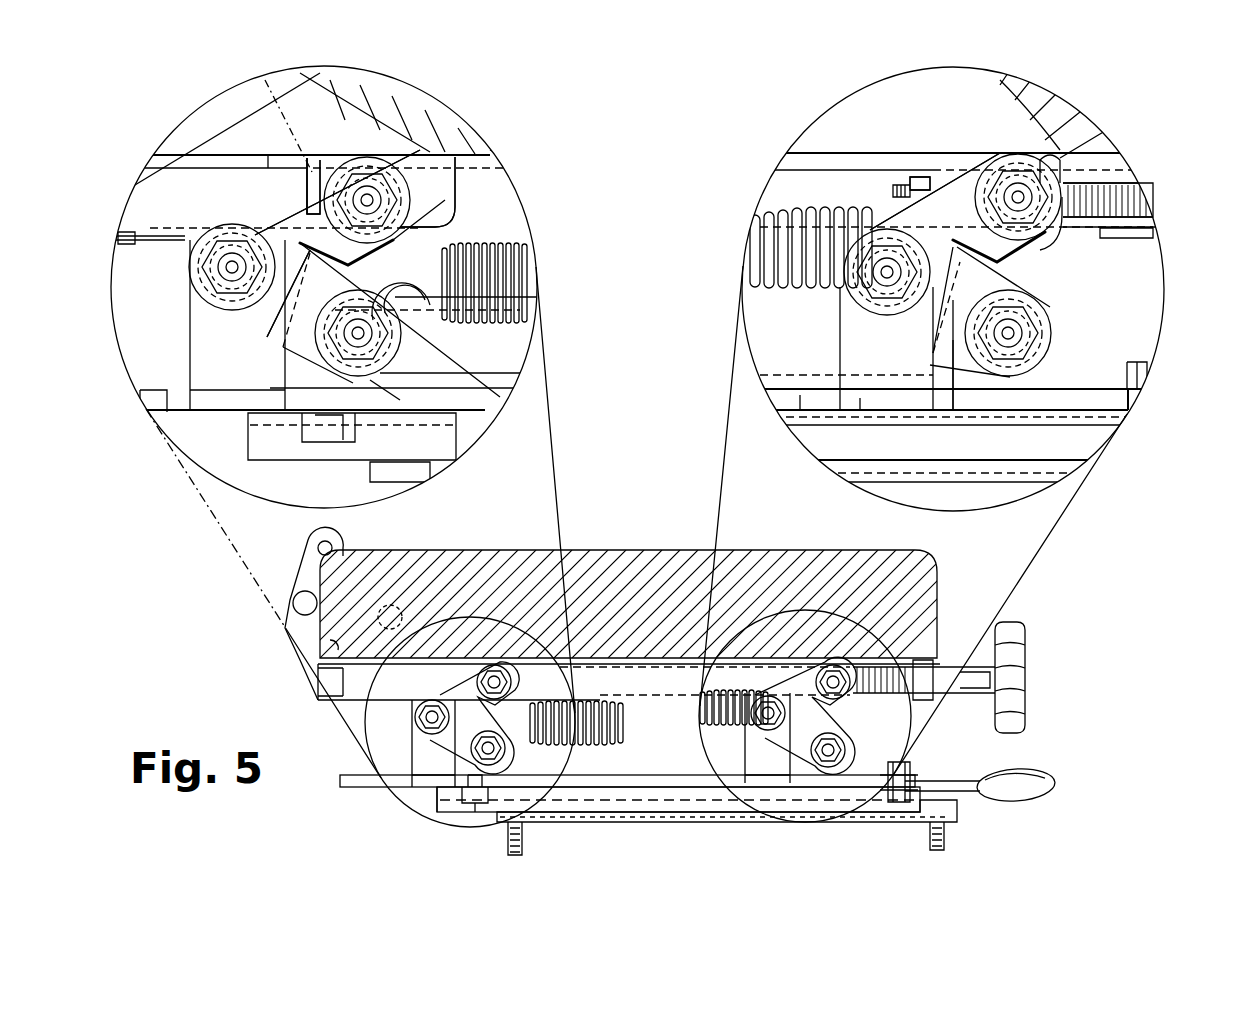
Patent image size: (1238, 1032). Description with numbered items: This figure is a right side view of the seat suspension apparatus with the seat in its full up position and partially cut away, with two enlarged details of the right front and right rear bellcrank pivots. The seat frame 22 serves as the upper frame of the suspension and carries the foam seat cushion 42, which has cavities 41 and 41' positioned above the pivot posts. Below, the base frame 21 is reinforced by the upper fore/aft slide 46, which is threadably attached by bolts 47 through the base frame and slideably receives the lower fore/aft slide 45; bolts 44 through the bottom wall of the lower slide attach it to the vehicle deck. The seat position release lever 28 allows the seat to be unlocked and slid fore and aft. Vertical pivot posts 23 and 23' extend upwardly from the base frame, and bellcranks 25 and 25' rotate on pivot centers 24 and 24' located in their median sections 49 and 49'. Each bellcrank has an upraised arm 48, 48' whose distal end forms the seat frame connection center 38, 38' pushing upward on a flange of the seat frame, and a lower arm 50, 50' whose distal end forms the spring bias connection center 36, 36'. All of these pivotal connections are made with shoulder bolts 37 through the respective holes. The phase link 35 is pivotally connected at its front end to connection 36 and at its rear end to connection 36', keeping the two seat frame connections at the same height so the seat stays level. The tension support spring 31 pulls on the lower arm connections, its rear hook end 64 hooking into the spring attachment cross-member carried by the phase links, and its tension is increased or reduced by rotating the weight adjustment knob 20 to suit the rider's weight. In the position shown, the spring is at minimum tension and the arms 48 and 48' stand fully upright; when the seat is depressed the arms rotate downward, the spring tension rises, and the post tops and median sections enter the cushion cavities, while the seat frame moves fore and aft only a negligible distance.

The weight adjustment knob 20 is at (1013, 668).
The base frame 21 is at (652, 782).
The seat frame 22 is at (810, 680).
The vertical pivot post 23 is at (771, 561).
The vertical pivot post 23' is at (265, 566).
The bellcrank pivot center 24 is at (789, 301).
The bellcrank pivot center 24' is at (186, 305).
The bellcrank 25 is at (820, 483).
The bellcrank 25' is at (251, 526).
The seat position release lever 28 is at (1030, 778).
The tension support spring 31 is at (594, 753).
The phase link 35 is at (595, 755).
The spring bias connection center 36 is at (1120, 319).
The spring bias connection center 36' is at (480, 349).
The shoulder bolt 37 is at (370, 196).
The seat frame connection center 38 is at (1066, 124).
The seat frame connection center 38' is at (441, 141).
The cavity 41 is at (805, 632).
The cavity 41' is at (474, 635).
The foam seat cushion 42 is at (632, 580).
The bolt 44 is at (507, 842).
The lower fore/aft slide 45 is at (693, 828).
The upper fore/aft slide 46 is at (788, 798).
The bolt 47 is at (475, 803).
The upraised arm 48 is at (1116, 227).
The upraised arm 48' is at (252, 192).
The median section 49 is at (851, 183).
The median section 49' is at (146, 263).
The lower arm 50 is at (968, 451).
The lower arm 50' is at (447, 433).
The rear hook end 64 is at (460, 224).